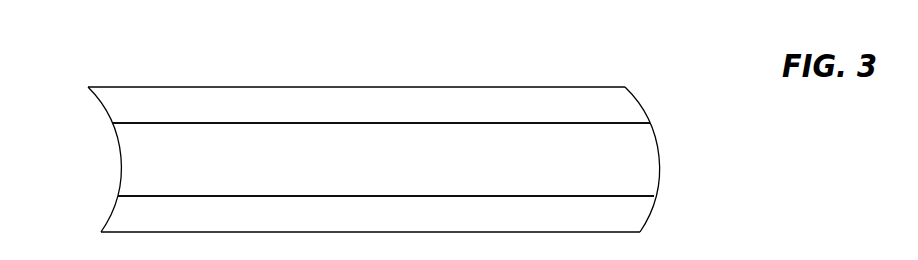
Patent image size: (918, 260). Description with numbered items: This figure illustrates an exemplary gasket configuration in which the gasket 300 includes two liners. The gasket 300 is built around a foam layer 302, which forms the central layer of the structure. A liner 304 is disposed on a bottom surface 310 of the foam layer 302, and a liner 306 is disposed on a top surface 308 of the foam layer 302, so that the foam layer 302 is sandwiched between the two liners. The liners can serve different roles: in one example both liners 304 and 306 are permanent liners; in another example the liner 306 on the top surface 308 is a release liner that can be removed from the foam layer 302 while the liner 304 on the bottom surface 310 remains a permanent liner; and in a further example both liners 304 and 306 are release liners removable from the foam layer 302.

The gasket 300 is at (415, 127).
The foam layer 302 is at (637, 150).
The liner 304 is at (633, 215).
The liner 306 is at (623, 105).
The top surface 308 is at (481, 123).
The bottom surface 310 is at (163, 196).